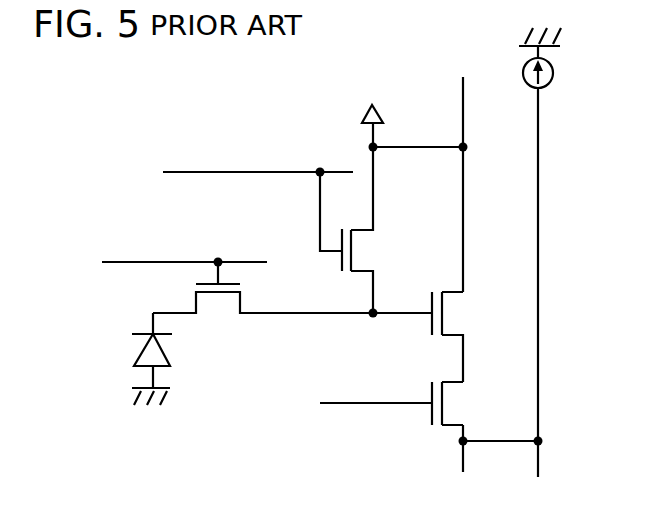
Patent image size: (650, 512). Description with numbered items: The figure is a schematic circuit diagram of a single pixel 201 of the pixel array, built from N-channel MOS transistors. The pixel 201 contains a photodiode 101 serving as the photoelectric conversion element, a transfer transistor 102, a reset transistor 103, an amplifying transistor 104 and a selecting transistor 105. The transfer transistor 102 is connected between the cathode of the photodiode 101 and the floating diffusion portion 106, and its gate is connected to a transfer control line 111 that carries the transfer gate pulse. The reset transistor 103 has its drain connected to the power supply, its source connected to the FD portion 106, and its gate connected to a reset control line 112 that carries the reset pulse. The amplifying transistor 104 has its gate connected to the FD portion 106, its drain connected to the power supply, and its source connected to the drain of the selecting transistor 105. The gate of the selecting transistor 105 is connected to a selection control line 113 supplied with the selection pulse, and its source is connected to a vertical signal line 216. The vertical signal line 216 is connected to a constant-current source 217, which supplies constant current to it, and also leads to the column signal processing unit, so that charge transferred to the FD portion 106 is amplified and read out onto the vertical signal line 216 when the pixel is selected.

The pixel 201 is at (105, 82).
The photodiode 101 is at (142, 346).
The transfer transistor 102 is at (218, 300).
The reset transistor 103 is at (360, 250).
The amplifying transistor 104 is at (455, 312).
The selecting transistor 105 is at (455, 400).
The floating diffusion portion 106 is at (373, 320).
The transfer control line 111 is at (148, 258).
The reset control line 112 is at (203, 172).
The selection control line 113 is at (372, 409).
The vertical signal line 216 is at (540, 245).
The constant-current source 217 is at (554, 71).